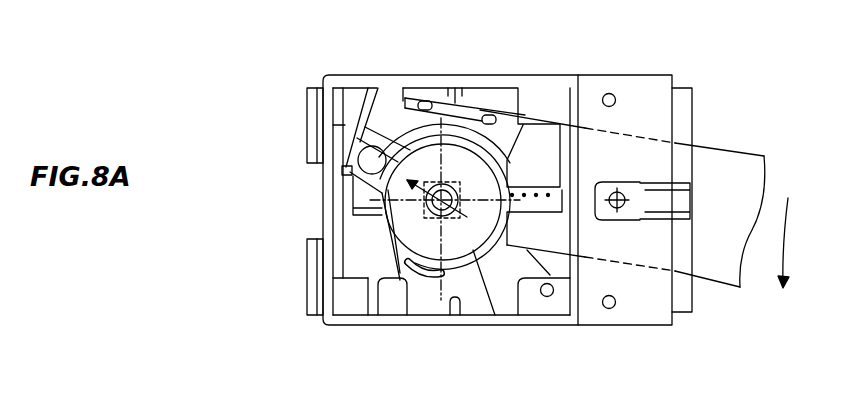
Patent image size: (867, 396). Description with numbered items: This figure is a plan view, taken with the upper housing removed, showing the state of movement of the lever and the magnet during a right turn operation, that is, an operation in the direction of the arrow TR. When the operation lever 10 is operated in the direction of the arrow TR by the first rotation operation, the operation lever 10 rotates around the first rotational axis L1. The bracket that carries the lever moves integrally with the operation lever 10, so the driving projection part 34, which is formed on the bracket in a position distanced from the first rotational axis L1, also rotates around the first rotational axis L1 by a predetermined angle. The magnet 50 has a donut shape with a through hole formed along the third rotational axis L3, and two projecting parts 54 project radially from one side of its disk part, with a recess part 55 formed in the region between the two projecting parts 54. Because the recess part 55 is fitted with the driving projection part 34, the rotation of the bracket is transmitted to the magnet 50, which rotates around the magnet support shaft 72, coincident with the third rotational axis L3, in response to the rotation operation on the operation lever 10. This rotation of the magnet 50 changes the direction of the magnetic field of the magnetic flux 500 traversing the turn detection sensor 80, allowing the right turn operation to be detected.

The operation lever 10 is at (718, 150).
The driving projection part 34 is at (369, 160).
The magnet 50 is at (454, 252).
The projecting parts 54 is at (344, 171).
The recess part 55 is at (357, 166).
The magnet support shaft 72 is at (440, 206).
The turn detection sensor 80 is at (447, 196).
The magnetic flux 500 is at (438, 204).
The first rotational axis L1 is at (617, 196).
The third rotational axis L3 is at (441, 196).
The arrow TR is at (798, 243).